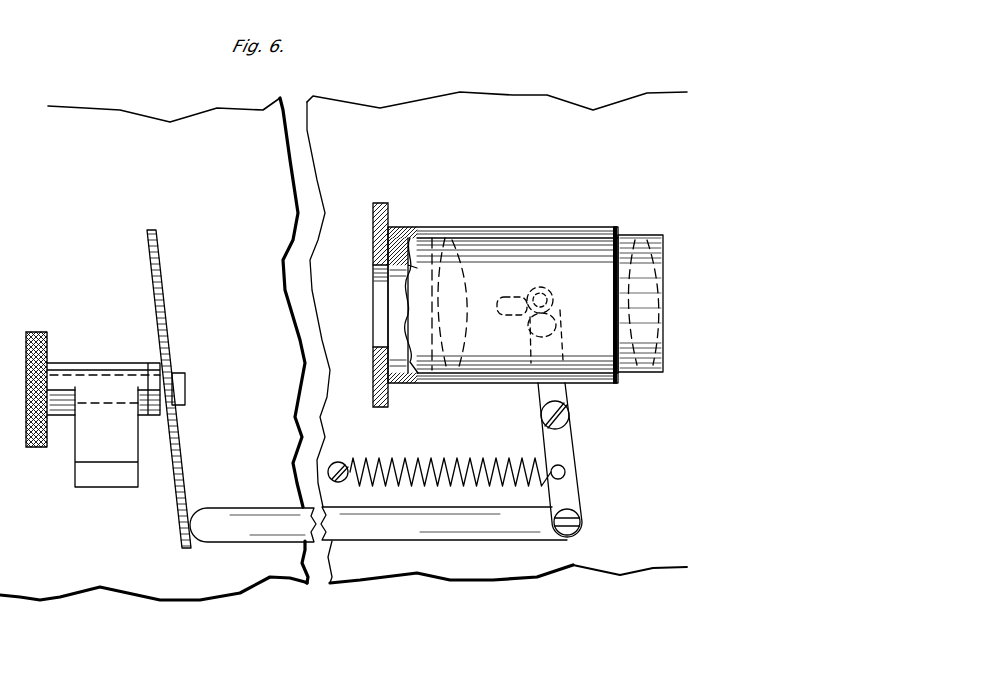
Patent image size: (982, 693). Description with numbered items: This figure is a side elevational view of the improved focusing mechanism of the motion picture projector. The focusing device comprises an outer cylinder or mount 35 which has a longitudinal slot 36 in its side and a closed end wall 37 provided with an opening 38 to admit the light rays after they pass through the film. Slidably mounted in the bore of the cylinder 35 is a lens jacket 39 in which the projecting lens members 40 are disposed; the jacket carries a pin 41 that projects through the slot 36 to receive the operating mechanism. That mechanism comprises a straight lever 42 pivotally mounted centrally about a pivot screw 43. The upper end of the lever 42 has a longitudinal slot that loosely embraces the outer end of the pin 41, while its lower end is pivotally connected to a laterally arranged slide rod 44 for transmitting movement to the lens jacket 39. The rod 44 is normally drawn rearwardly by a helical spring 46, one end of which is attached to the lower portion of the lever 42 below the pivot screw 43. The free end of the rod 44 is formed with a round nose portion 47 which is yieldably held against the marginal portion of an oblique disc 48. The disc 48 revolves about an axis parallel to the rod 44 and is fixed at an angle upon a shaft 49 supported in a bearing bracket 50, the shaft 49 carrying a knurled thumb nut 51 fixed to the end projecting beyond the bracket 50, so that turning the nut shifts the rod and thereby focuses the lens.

The outer cylinder or mount 35 is at (489, 228).
The longitudinal slot 36 is at (560, 303).
The closed end wall 37 is at (375, 250).
The opening 38 is at (377, 302).
The lens jacket 39 is at (640, 233).
The projecting lens members 40 is at (468, 282).
The pin 41 is at (525, 320).
The straight lever 42 is at (563, 390).
The pivot screw 43 is at (541, 419).
The slide rod 44 is at (502, 537).
The helical spring 46 is at (462, 456).
The round nose portion 47 is at (199, 512).
The oblique disc 48 is at (185, 441).
The shaft 49 is at (188, 385).
The bearing bracket 50 is at (110, 363).
The knurled thumb nut 51 is at (39, 331).